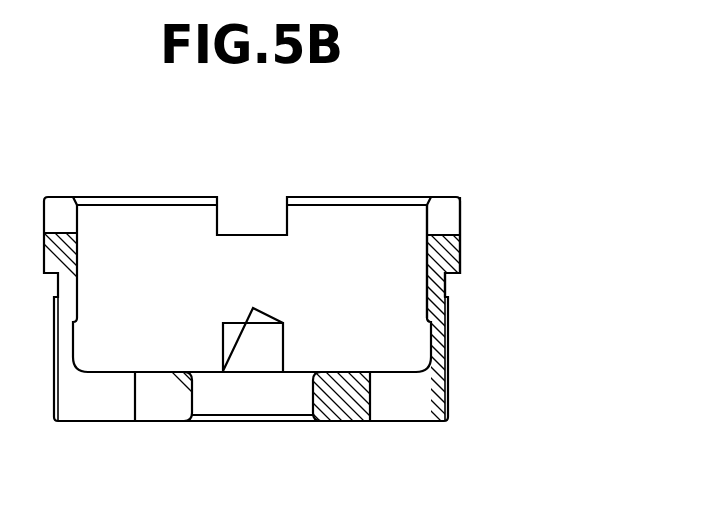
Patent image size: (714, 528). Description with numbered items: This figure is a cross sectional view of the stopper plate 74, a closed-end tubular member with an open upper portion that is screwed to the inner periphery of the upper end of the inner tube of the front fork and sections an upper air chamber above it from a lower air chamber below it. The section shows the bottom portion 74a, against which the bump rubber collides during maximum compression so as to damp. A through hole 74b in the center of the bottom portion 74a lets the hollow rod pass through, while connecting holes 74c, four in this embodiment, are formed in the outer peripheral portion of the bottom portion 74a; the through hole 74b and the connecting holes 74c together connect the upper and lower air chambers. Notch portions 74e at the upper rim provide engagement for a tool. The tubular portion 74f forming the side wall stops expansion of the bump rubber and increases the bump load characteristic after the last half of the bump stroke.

The stopper plate 74 is at (388, 165).
The bottom portion 74a is at (163, 410).
The through hole 74b is at (253, 397).
The connecting holes 74c is at (394, 383).
The notch portions 74e is at (443, 217).
The tubular portion 74f is at (435, 292).